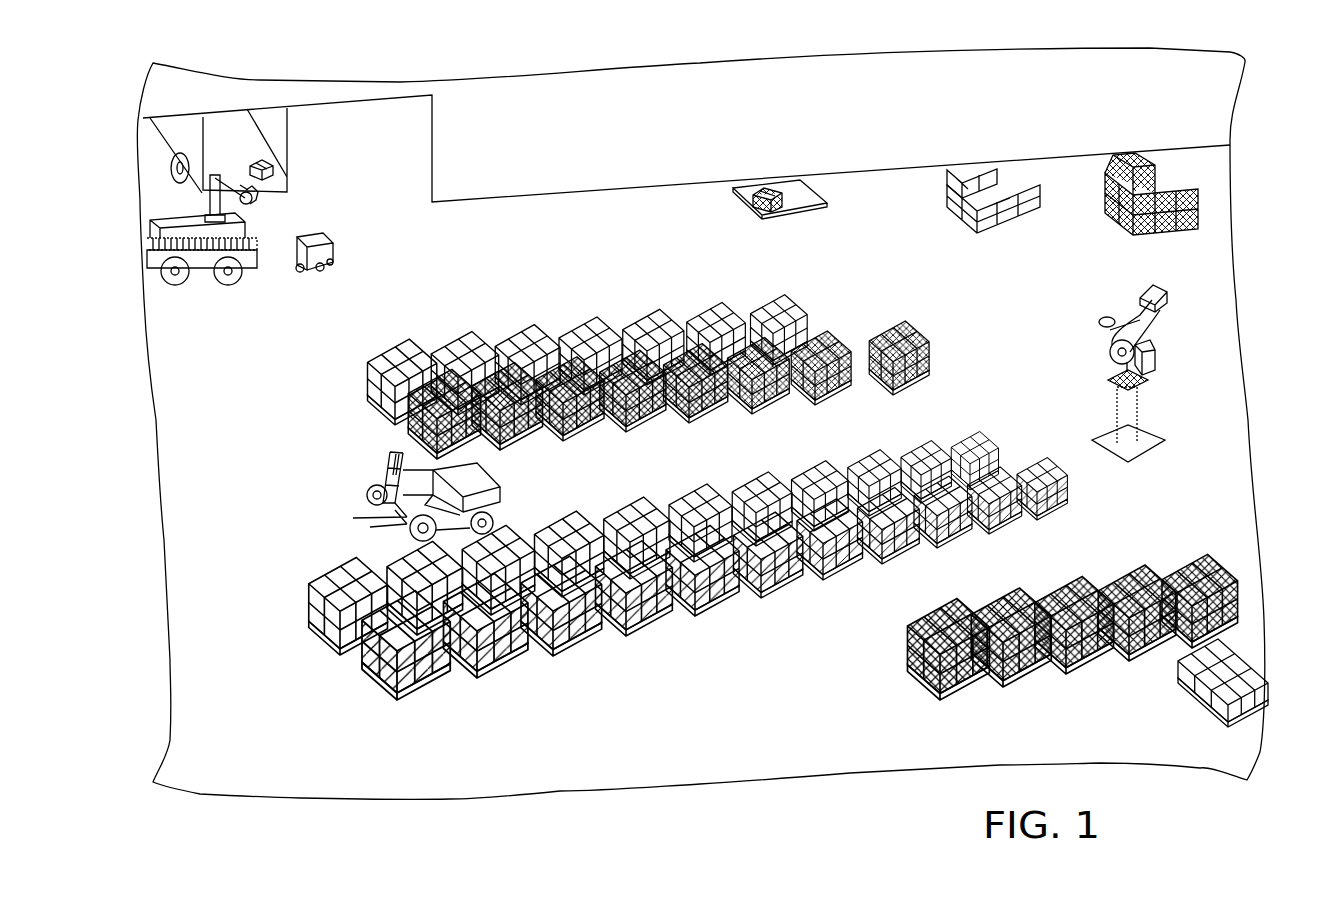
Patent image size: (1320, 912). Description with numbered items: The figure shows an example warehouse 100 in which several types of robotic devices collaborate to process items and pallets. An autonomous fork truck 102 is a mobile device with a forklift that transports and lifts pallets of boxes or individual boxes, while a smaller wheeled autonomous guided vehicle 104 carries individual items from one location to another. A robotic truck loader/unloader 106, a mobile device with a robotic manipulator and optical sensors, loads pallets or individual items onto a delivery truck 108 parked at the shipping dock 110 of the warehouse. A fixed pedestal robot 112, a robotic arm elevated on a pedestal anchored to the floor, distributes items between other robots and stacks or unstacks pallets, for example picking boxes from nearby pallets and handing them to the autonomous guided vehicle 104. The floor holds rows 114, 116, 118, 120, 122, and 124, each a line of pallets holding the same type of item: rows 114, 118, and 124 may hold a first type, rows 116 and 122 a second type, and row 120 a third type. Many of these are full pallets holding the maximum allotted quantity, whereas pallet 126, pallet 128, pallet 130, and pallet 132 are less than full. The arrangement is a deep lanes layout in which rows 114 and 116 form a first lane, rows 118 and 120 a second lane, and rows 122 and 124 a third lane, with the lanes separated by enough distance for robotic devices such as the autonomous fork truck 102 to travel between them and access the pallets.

The warehouse 100 is at (550, 100).
The autonomous fork truck 102 is at (503, 490).
The autonomous guided vehicle 104 is at (332, 257).
The robotic truck loader/unloader 106 is at (202, 262).
The delivery truck 108 is at (265, 122).
The shipping dock 110 is at (362, 200).
The pedestal robot 112 is at (1153, 368).
The row 114 is at (345, 415).
The row 116 is at (385, 446).
The row 118 is at (280, 646).
The row 120 is at (343, 686).
The row 122 is at (885, 691).
The row 124 is at (1150, 713).
The pallet 126 is at (758, 213).
The pallet 128 is at (1005, 230).
The pallet 130 is at (1183, 228).
The pallet 132 is at (935, 390).